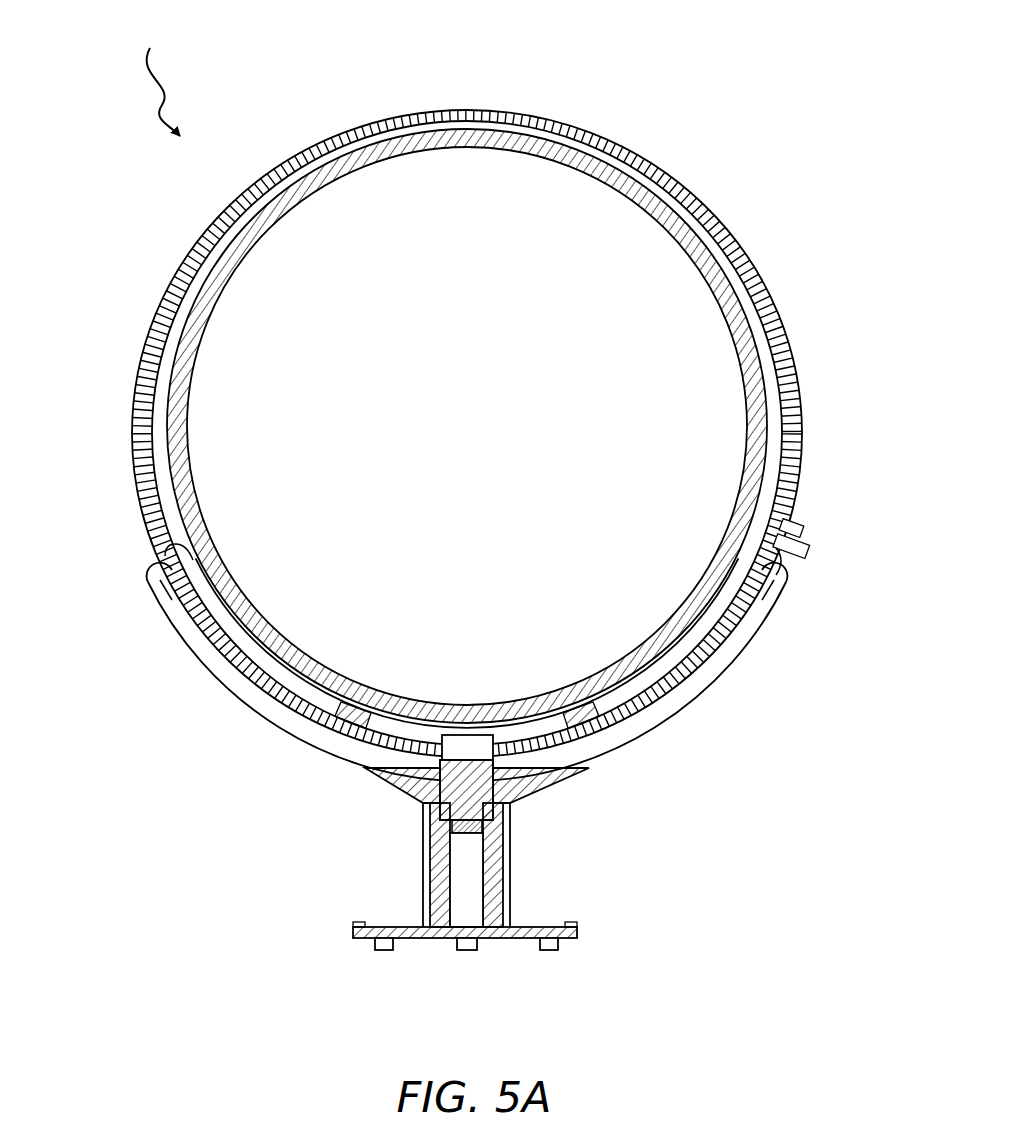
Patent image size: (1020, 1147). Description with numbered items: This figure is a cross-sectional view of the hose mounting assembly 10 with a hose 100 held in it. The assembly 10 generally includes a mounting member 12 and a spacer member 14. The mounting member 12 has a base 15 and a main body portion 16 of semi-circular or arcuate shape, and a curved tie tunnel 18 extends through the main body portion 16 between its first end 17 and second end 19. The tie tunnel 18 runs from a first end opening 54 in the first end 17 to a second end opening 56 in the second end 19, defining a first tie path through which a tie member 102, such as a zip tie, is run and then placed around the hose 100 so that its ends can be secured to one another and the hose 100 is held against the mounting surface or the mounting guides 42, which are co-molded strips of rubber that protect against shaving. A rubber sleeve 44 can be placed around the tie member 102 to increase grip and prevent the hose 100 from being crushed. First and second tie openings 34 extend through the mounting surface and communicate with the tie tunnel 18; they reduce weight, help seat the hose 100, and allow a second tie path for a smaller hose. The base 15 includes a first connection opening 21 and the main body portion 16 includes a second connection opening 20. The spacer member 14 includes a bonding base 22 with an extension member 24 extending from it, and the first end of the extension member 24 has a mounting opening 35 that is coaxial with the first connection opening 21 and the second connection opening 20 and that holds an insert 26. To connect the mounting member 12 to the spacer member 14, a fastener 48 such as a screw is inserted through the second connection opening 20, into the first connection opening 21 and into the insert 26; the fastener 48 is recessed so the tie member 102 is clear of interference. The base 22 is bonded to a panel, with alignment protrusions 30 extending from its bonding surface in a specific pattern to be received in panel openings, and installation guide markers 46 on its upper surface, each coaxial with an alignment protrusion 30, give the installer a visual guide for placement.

The hose mounting assembly 10 is at (150, 74).
The hose 100 is at (620, 180).
The rubber sleeve 44 is at (758, 288).
The mounting guides 42 is at (792, 521).
The main body portion 16 is at (652, 722).
The tie tunnel 18 is at (748, 630).
The tie member 102 is at (300, 716).
The tie openings 34 is at (233, 645).
The second end 19 is at (150, 567).
The first end 17 is at (792, 577).
The second end opening 56 is at (160, 592).
The first end opening 54 is at (780, 592).
The mounting member 12 is at (213, 712).
The second connection opening 20 is at (470, 742).
The spacer member 14 is at (356, 862).
The base 15 is at (400, 790).
The first connection opening 21 is at (487, 776).
The fastener 48 is at (467, 808).
The extension member 24 is at (440, 907).
The insert 26 is at (468, 835).
The mounting opening 35 is at (460, 860).
The base 22 is at (565, 935).
The installation guide markers 46 is at (360, 925).
The alignment protrusions 30 is at (384, 951).